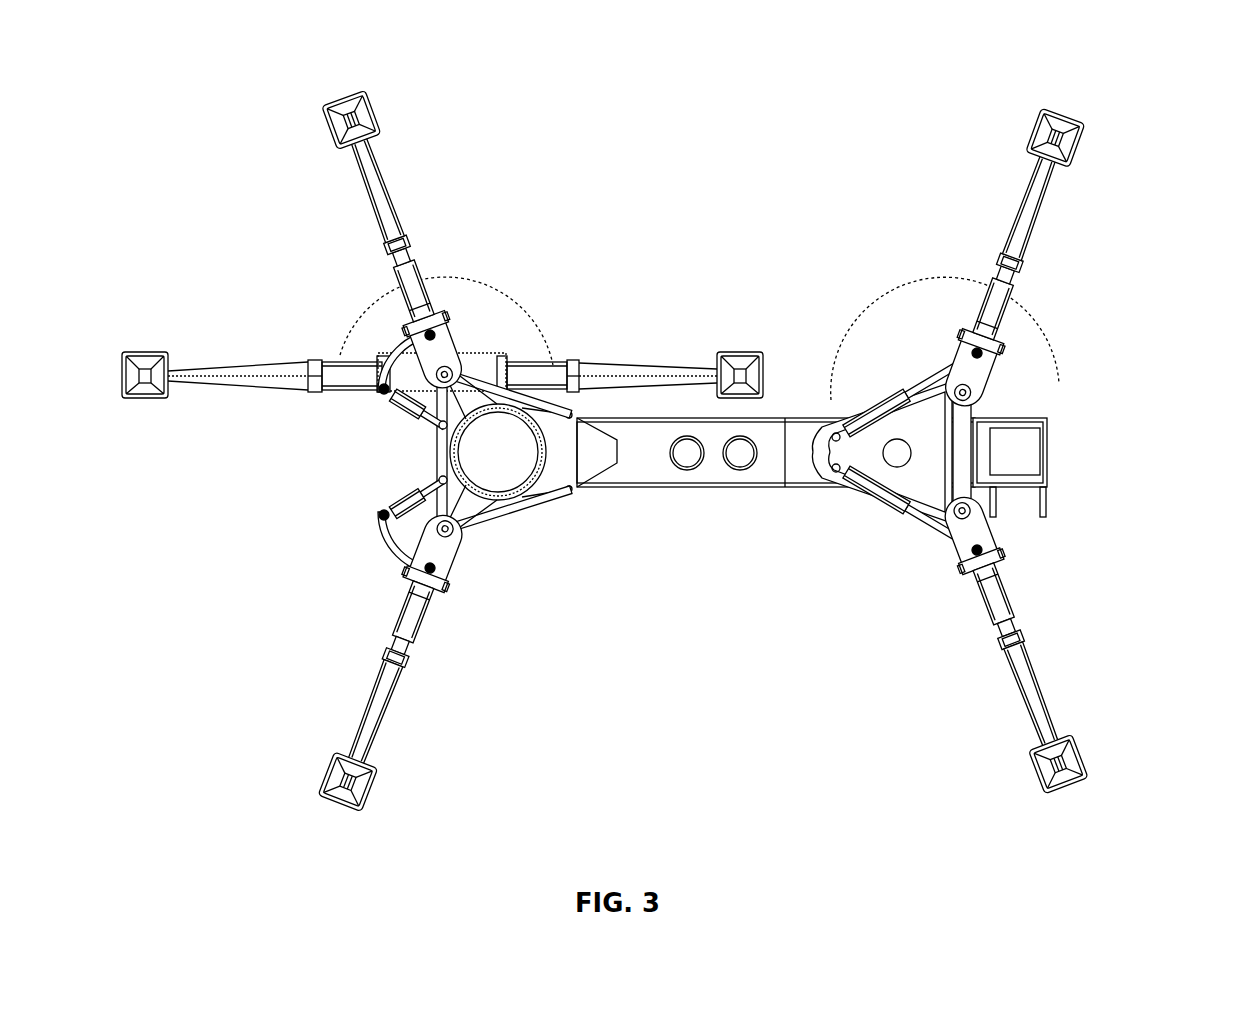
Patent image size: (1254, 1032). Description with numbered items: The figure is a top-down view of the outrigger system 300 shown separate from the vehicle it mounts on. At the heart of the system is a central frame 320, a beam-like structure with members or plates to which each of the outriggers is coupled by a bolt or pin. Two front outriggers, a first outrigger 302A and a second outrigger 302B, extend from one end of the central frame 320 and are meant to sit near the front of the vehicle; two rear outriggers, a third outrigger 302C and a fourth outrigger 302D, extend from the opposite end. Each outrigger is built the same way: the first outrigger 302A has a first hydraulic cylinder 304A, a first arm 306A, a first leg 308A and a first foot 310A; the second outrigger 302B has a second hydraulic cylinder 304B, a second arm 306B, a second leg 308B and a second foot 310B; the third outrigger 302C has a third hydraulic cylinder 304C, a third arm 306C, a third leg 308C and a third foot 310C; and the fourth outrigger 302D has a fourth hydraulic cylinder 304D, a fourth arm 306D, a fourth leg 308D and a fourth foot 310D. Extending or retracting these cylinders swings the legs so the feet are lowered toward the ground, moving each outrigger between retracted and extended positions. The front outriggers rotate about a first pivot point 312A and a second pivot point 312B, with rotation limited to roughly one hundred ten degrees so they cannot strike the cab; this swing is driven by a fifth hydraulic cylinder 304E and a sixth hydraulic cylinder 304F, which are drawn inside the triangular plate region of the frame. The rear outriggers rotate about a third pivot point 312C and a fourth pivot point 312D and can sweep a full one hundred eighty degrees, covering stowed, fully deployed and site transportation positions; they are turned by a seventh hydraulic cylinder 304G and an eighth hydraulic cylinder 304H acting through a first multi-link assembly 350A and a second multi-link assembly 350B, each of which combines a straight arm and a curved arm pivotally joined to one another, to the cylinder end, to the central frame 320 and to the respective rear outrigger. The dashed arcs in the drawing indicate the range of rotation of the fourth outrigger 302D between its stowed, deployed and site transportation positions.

The outrigger system 300 is at (669, 423).
The first outrigger 302A is at (1040, 243).
The second outrigger 302B is at (1051, 645).
The third outrigger 302C is at (365, 660).
The fourth outrigger 302D is at (370, 242).
The first hydraulic cylinder 304A is at (995, 308).
The second hydraulic cylinder 304B is at (997, 600).
The third hydraulic cylinder 304C is at (413, 620).
The fourth hydraulic cylinder 304D is at (405, 282).
The fifth hydraulic cylinder 304E is at (865, 415).
The sixth hydraulic cylinder 304F is at (868, 492).
The seventh hydraulic cylinder 304G is at (395, 493).
The eighth hydraulic cylinder 304H is at (395, 418).
The first arm 306A is at (988, 343).
The second arm 306B is at (990, 547).
The third arm 306C is at (440, 578).
The fourth arm 306D is at (413, 323).
The first leg 308A is at (1023, 222).
The second leg 308B is at (1017, 665).
The third leg 308C is at (367, 708).
The fourth leg 308D is at (377, 190).
The first foot 310A is at (1032, 130).
The second foot 310B is at (1040, 765).
The third foot 310C is at (338, 775).
The fourth foot 310D is at (322, 122).
The first pivot point 312A is at (958, 383).
The second pivot point 312B is at (957, 517).
The third pivot point 312C is at (455, 538).
The fourth pivot point 312D is at (446, 370).
The central frame 320 is at (648, 458).
The first multi-link assembly 350A is at (354, 538).
The second multi-link assembly 350B is at (346, 405).